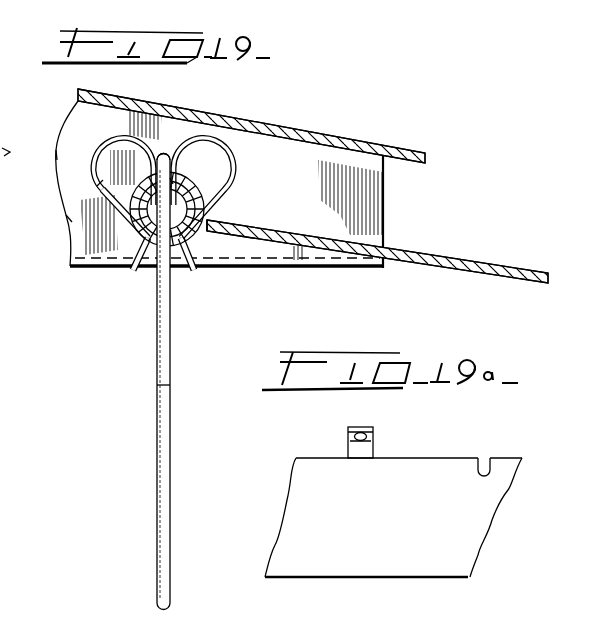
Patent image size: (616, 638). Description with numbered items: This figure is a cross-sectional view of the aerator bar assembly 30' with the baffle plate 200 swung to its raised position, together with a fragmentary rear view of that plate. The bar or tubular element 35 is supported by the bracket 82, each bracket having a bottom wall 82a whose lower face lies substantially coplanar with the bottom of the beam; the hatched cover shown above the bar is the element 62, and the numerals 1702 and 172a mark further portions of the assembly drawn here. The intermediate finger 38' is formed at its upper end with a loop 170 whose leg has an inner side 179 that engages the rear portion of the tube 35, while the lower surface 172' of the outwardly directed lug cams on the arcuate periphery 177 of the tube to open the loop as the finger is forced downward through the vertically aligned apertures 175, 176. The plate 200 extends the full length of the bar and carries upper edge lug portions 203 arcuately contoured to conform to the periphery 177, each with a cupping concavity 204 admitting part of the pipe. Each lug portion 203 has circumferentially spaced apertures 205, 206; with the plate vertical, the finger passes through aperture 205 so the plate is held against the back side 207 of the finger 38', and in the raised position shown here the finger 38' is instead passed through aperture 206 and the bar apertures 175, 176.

In FIG. 19, the top flange / cover wall 62 is at (298, 128).
In FIG. 19, the bracket structure 82 is at (362, 175).
In FIG. 19, the bottom wall 82a is at (340, 262).
In FIG. 19, the loop 170 is at (210, 140).
In FIG. 19, the spring clip second loop 1702 is at (122, 153).
In FIG. 19, the housing portion 172a is at (28, 191).
In FIG. 19a, the lower surface of the lug 172' is at (480, 440).
In FIG. 19, the aperture 175 is at (212, 203).
In FIG. 19, the aperture 176 is at (148, 277).
In FIG. 19, the arcuate periphery 177 is at (228, 178).
In FIG. 19, the inner side of the leg 179 is at (72, 222).
In FIG. 19, the plate or baffle 200 is at (447, 256).
In FIG. 19a, the plate or baffle 200 is at (313, 512).
In FIG. 19, the upper edge lug portion 203 is at (155, 236).
In FIG. 19a, the upper edge lug portion 203 is at (402, 408).
In FIG. 19, the cupping concavity 204 is at (225, 222).
In FIG. 19, the aperture 205 is at (97, 186).
In FIG. 19, the aperture 206 is at (172, 182).
In FIG. 19a, the aperture 206 is at (348, 441).
In FIG. 19, the back side of the finger 207 is at (170, 382).
In FIG. 19, the aerator bar assembly 30' is at (87, 247).
In FIG. 19, the bar or tubular element 35 is at (214, 280).
In FIG. 19, the intermediate finger 38' is at (189, 382).